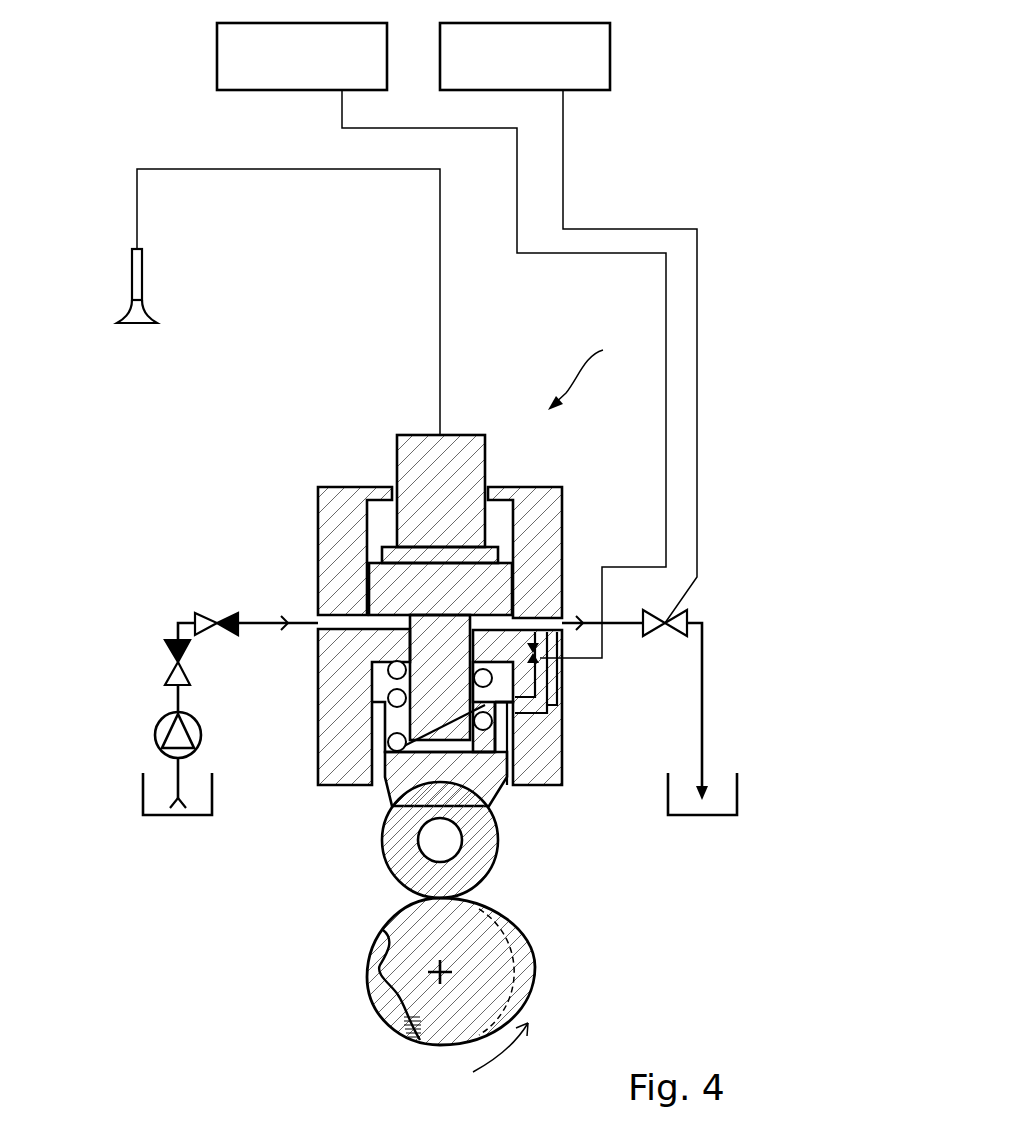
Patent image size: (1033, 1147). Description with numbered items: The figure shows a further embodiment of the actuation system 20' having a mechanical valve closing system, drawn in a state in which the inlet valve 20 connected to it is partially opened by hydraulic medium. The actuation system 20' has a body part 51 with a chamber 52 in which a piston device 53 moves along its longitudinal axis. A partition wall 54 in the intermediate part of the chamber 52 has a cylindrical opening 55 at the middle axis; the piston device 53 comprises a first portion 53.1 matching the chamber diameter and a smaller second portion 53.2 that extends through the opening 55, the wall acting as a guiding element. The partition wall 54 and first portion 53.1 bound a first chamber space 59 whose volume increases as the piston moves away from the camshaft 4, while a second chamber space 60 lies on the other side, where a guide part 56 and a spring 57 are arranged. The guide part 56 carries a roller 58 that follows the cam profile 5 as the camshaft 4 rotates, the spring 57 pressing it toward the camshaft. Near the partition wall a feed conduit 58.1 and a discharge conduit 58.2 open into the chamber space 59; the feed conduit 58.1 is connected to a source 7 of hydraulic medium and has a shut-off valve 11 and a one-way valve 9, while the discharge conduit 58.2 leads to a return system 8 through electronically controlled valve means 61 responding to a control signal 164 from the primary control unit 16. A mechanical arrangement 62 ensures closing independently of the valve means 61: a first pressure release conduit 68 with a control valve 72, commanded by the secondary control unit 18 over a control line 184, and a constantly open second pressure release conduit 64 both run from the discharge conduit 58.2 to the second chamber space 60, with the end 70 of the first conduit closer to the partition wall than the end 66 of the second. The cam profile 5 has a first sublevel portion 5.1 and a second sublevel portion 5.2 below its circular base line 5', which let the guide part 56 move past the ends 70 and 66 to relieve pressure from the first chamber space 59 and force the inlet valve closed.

The camshaft 4 is at (449, 1013).
The cam profile 5 is at (503, 971).
The first sublevel portion 5.1 is at (375, 955).
The second sublevel portion 5.2 is at (393, 1001).
The circular base line 5' is at (453, 1054).
The source of hydraulic medium 7 is at (192, 800).
The return system for hydraulic medium 8 is at (725, 778).
The one-way valve 9 is at (223, 614).
The shut-off valve 11 is at (165, 655).
The primary control unit 16 is at (513, 67).
The secondary control unit 18 is at (290, 67).
The inlet valve 20 is at (278, 302).
The actuation system 20' is at (598, 373).
The body part 51 is at (340, 508).
The chamber 52 is at (492, 508).
The piston device 53 is at (365, 573).
The first portion of the piston device 53.1 is at (400, 590).
The second portion of the piston device 53.2 is at (440, 650).
The partition wall 54 is at (410, 737).
The cylindrical opening 55 is at (478, 648).
The guide part 56 is at (480, 773).
The spring 57 is at (385, 778).
The roller 58 is at (463, 865).
The feed conduit 58.1 is at (350, 625).
The discharge conduit 58.2 is at (537, 620).
The first chamber space 59 is at (562, 497).
The second chamber space 60 is at (500, 725).
The electronically controlled valve means 61 is at (647, 633).
The mechanical arrangement 62 is at (614, 729).
The second pressure release conduit 64 is at (548, 665).
The end of the second pressure release conduit 66 is at (518, 717).
The first pressure release conduit 68 is at (540, 680).
The end of the first pressure release conduit 70 is at (515, 700).
The control valve 72 is at (602, 658).
The control signal 164 is at (698, 550).
The signal line 184 is at (667, 447).